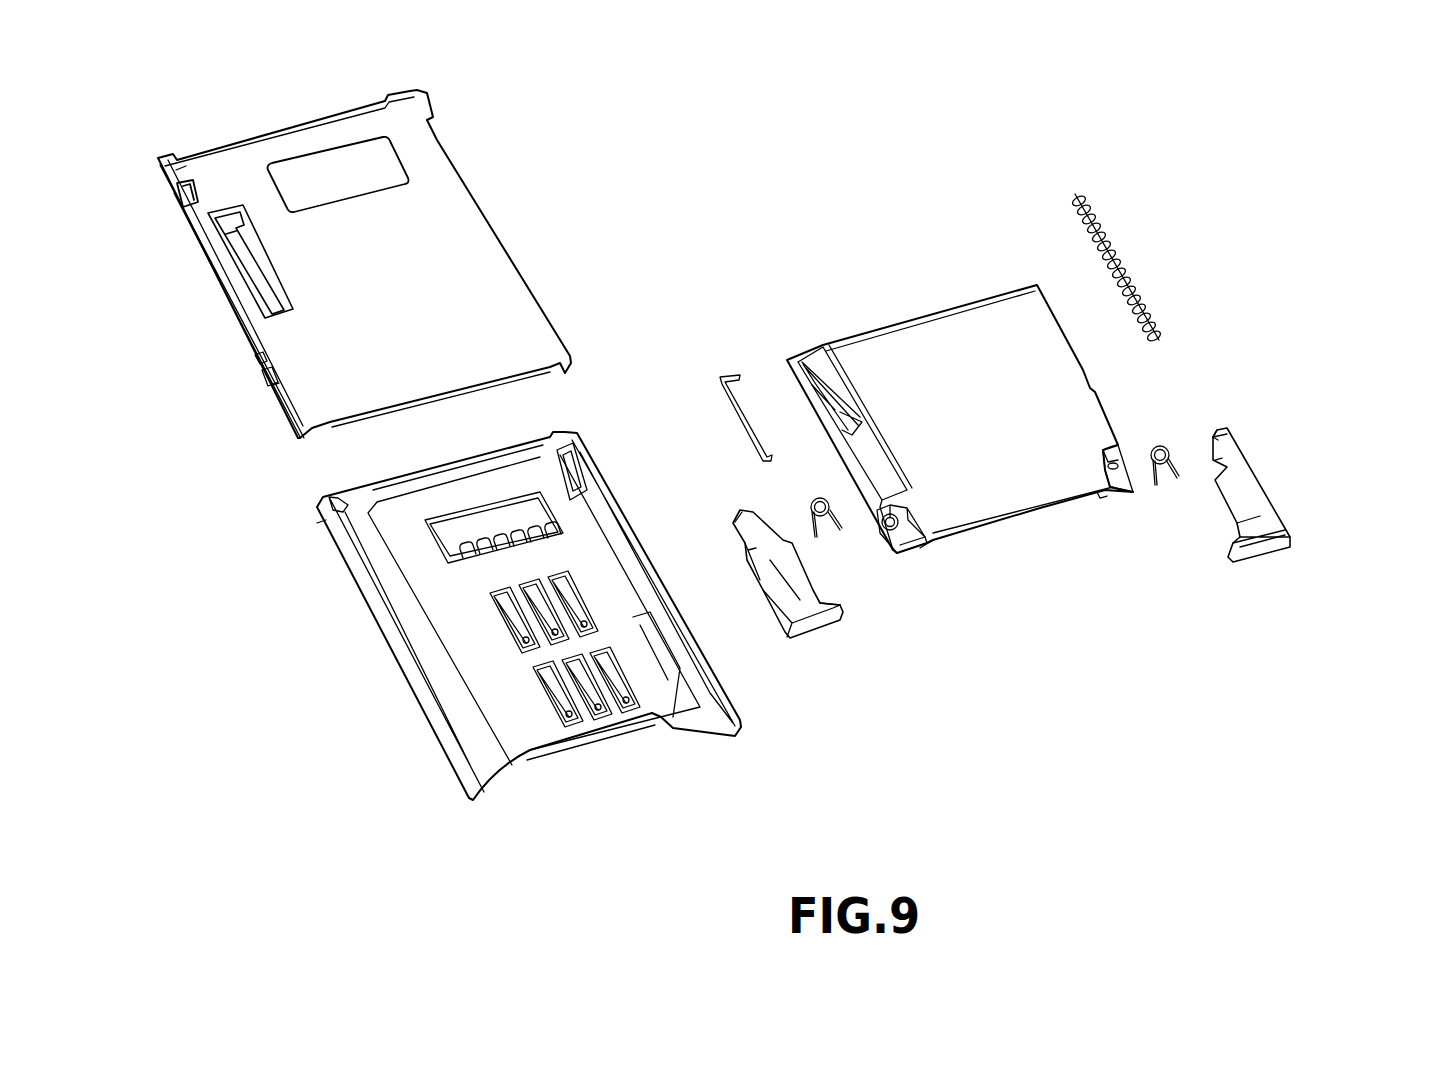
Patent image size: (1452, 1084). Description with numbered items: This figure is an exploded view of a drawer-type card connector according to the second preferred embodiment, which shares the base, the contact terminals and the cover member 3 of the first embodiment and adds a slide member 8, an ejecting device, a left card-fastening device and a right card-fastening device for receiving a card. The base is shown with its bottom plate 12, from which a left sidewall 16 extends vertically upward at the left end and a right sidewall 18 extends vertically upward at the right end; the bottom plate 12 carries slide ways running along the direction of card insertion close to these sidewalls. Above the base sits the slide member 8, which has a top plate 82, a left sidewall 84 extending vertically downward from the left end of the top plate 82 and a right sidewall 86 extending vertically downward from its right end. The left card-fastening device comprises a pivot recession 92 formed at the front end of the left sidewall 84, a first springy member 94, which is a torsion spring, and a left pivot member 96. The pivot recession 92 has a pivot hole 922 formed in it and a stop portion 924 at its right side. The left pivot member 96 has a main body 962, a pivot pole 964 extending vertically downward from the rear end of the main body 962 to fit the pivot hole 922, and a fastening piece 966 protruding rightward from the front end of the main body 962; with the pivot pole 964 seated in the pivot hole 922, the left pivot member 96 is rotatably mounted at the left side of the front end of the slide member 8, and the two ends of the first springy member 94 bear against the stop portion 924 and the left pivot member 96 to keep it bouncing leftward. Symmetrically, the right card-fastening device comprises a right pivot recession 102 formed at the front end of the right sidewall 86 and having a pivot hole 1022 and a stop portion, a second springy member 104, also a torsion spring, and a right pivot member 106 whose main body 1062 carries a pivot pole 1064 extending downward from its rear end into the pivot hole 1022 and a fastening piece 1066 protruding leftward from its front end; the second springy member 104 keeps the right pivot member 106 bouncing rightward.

The cover member 3 is at (420, 263).
The slide member 8 is at (1068, 459).
The bottom plate 12 is at (490, 647).
The left sidewall 16 is at (513, 663).
The right sidewall 18 is at (677, 627).
The top plate 82 is at (953, 363).
The left sidewall 84 is at (927, 543).
The right sidewall 86 is at (1100, 497).
The pivot recession 92 is at (960, 632).
The pivot hole 922 is at (895, 557).
The stop portion 924 is at (922, 545).
The first springy member 94 is at (829, 523).
The left pivot member 96 is at (758, 618).
The main body 962 is at (792, 580).
The pivot pole 964 is at (733, 527).
The fastening piece 966 is at (833, 610).
The right pivot recession 102 is at (1226, 564).
The pivot hole 1022 is at (1118, 480).
The second springy member 104 is at (1163, 447).
The right pivot member 106 is at (1310, 423).
The main body 1062 is at (1255, 490).
The pivot pole 1064 is at (1222, 435).
The fastening piece 1066 is at (1268, 552).